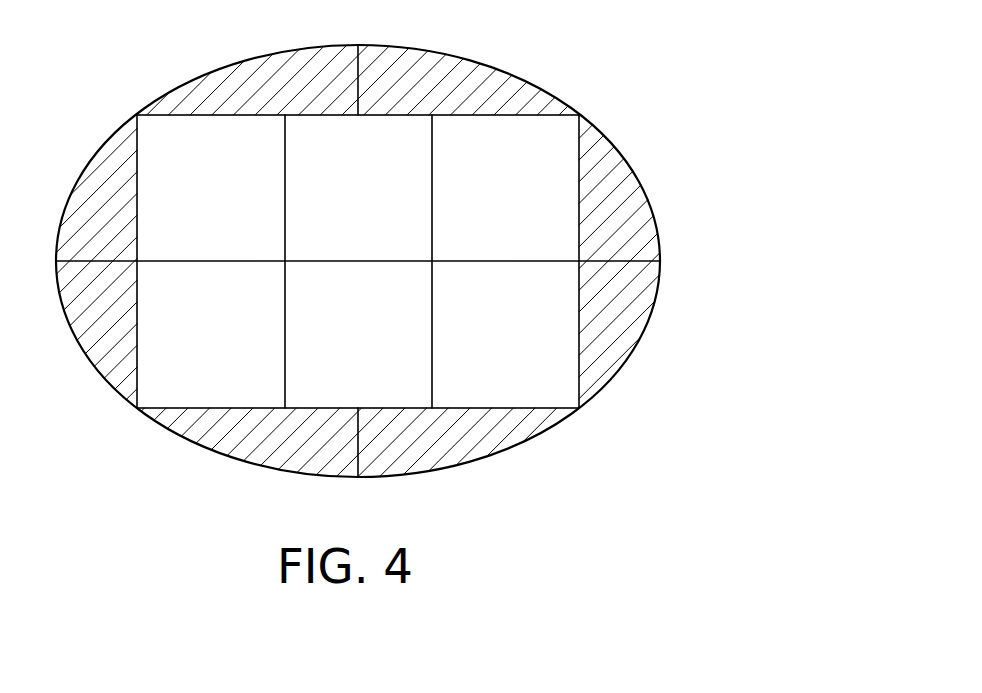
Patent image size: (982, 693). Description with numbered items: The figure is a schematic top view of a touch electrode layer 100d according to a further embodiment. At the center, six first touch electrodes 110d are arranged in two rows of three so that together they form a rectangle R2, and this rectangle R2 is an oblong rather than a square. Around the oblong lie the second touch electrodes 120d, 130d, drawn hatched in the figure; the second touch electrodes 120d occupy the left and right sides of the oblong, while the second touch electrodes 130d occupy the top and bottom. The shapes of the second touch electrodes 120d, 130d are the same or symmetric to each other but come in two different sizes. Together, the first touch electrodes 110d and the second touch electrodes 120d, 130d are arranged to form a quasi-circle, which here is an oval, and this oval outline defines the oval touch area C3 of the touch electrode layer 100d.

The touch electrode layer 100d is at (389, 266).
The first touch electrodes 110d is at (537, 179).
The second touch electrodes 120d is at (622, 235).
The second touch electrodes 130d is at (364, 243).
The rectangle R2 is at (493, 90).
The oval touch area C3 is at (613, 91).